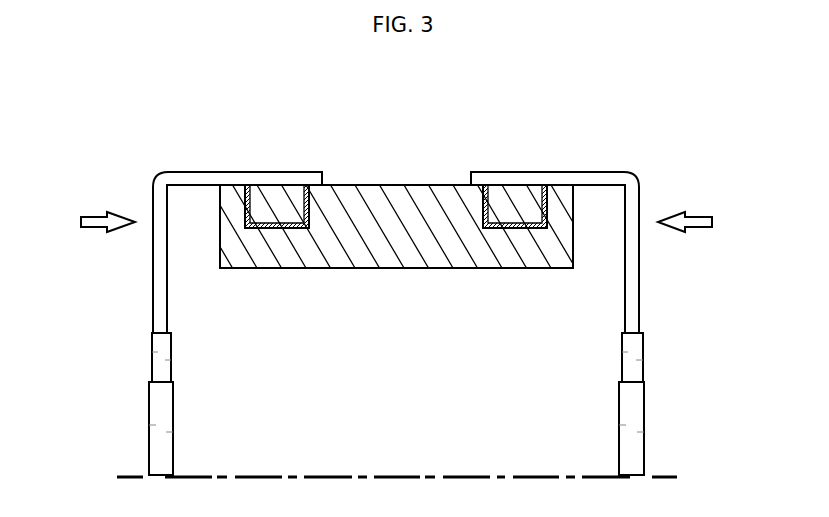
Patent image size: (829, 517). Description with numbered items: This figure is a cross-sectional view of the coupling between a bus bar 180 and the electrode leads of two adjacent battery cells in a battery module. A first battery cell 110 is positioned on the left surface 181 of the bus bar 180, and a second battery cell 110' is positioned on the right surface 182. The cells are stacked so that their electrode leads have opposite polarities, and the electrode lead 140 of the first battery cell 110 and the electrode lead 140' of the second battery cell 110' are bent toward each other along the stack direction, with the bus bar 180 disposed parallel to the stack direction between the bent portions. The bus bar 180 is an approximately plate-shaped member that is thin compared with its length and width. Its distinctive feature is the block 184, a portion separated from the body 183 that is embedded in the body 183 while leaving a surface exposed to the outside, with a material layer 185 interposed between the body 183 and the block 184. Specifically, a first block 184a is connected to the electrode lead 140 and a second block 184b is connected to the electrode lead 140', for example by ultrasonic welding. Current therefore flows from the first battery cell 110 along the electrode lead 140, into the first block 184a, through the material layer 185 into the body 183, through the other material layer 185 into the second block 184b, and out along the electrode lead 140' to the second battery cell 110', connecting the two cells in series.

The first battery cell 110 is at (117, 404).
The second battery cell 110' is at (680, 404).
The electrode lead 140 is at (237, 233).
The electrode lead 140' is at (555, 233).
The bus bar 180 is at (427, 140).
The left surface 181 is at (88, 222).
The right surface 182 is at (705, 222).
The body 183 is at (369, 186).
The block 184 is at (317, 303).
The first block 184a is at (282, 213).
The second block 184b is at (510, 213).
The material layer 185 is at (241, 229).